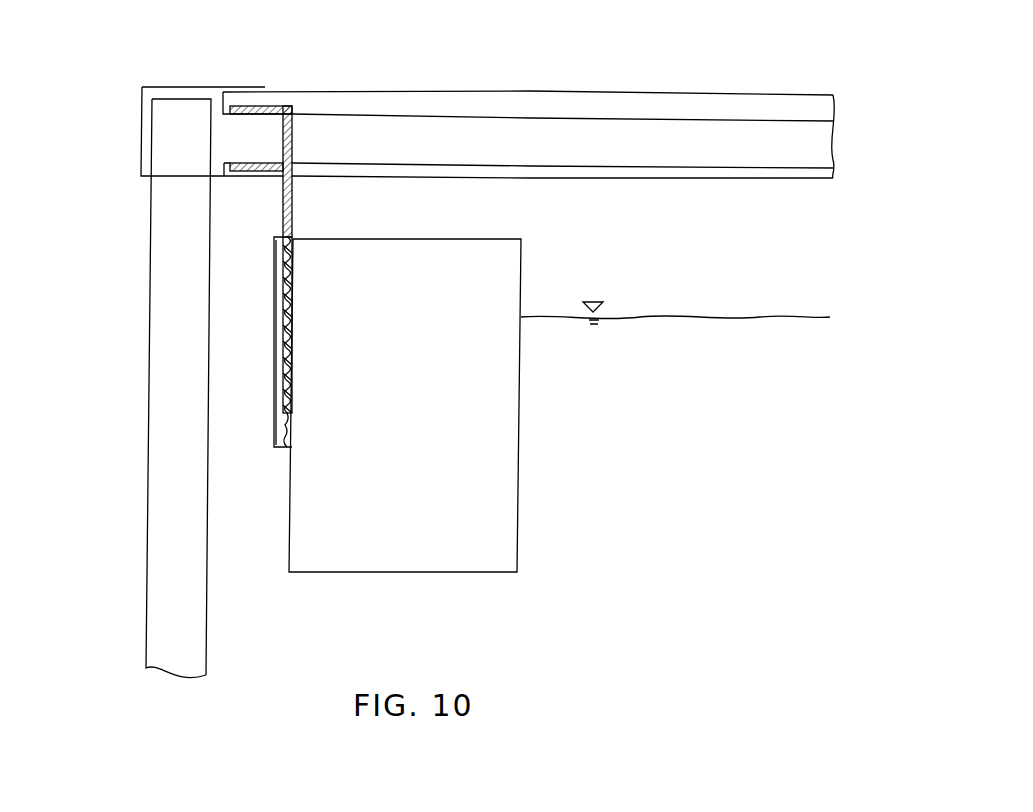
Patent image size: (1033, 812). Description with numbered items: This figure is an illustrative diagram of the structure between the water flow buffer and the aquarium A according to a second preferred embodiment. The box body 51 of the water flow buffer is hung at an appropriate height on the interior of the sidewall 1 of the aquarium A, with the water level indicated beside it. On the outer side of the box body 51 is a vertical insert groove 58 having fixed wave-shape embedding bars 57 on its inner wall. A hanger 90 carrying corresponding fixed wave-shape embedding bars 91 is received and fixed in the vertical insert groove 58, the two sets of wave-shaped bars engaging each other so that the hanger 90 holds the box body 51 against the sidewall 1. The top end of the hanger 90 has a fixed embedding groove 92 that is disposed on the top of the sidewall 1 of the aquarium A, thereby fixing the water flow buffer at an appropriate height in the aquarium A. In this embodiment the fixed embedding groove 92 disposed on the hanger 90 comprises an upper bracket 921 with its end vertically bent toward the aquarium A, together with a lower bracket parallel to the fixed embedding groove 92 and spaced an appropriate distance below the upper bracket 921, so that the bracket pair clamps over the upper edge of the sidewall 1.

The sidewall 1 is at (155, 581).
The box body 51 is at (470, 239).
The fixed wave-shape embedding bars 57 is at (277, 420).
The vertical insert groove 58 is at (283, 450).
The hanger 90 is at (292, 202).
The fixed wave-shape embedding bars 91 is at (285, 355).
The fixed embedding groove 92 is at (259, 105).
The upper bracket 921 is at (245, 166).
The aquarium A is at (660, 82).